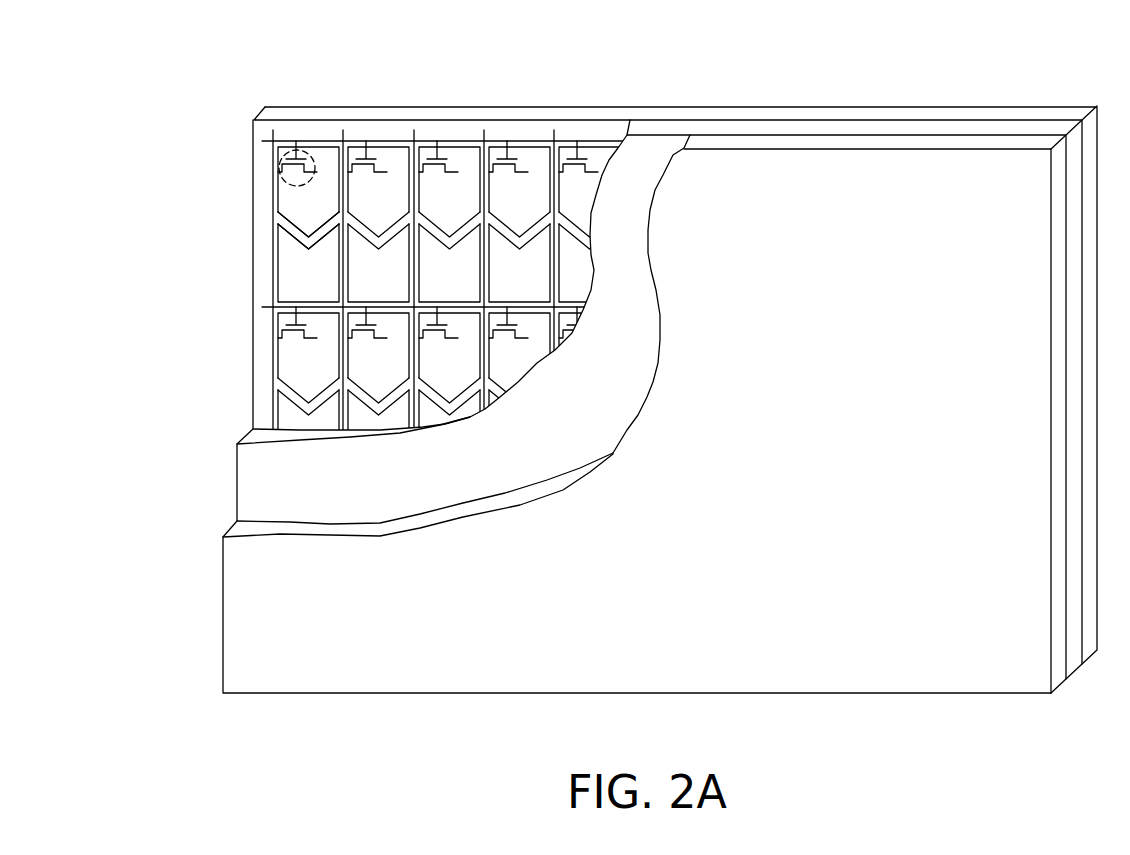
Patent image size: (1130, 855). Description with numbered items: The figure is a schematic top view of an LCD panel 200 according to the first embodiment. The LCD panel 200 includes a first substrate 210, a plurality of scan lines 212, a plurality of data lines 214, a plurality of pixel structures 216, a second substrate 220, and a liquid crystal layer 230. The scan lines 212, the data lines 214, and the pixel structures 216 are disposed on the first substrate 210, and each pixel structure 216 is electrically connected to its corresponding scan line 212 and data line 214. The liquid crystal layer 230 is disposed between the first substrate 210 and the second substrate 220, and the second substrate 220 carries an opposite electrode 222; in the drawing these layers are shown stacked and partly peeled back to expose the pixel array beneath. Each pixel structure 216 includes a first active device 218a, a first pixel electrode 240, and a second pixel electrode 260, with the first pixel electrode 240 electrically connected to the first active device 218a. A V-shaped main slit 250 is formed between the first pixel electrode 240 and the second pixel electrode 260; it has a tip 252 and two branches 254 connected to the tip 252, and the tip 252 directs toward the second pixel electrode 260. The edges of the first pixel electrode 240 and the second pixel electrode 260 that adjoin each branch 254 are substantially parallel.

The LCD panel 200 is at (1117, 764).
The first substrate 210 is at (1033, 113).
The scan lines 212 is at (312, 140).
The data lines 214 is at (273, 375).
The pixel structures 216 is at (102, 153).
The first active device 218a is at (273, 188).
The second substrate 220 is at (852, 145).
The opposite electrode 222 is at (779, 135).
The liquid crystal layer 230 is at (942, 128).
The first pixel electrode 240 is at (292, 203).
The V-shaped main slit 250 is at (167, 226).
The tip 252 is at (308, 238).
The branches 254 is at (295, 232).
The second pixel electrode 260 is at (297, 283).